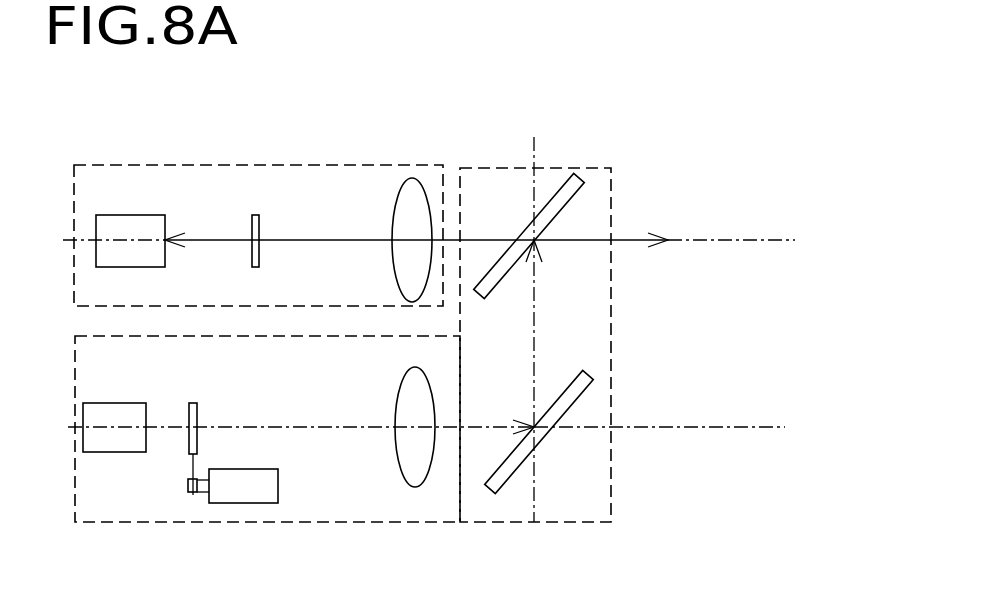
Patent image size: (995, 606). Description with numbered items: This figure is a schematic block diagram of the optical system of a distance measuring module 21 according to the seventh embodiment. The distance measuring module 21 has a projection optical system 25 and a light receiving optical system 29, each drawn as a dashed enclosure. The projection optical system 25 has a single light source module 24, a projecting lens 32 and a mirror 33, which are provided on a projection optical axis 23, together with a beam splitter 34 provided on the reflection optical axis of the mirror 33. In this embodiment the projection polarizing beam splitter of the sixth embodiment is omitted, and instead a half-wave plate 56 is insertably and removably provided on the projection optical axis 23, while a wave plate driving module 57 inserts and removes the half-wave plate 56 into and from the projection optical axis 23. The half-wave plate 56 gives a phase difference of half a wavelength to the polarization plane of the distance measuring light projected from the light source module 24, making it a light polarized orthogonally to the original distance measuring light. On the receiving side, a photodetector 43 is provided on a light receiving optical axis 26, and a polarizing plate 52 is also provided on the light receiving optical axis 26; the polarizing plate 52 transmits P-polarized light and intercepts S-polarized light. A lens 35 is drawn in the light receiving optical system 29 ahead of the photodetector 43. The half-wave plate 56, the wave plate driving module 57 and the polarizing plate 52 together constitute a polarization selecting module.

The distance measuring module 21 is at (709, 126).
The projection optical axis 23 is at (648, 427).
The light source module 24 is at (118, 403).
The projection optical system 25 is at (325, 522).
The light receiving optical axis 26 is at (772, 243).
The light receiving optical system 29 is at (358, 165).
The projecting lens 32 is at (397, 392).
The mirror 33 is at (562, 388).
The beam splitter 34 is at (498, 283).
The condensing lens 35 is at (395, 208).
The photodetector 43 is at (128, 215).
The polarizing plate 52 is at (250, 255).
The half-wave plate 56 is at (197, 415).
The wave plate driving module 57 is at (278, 485).